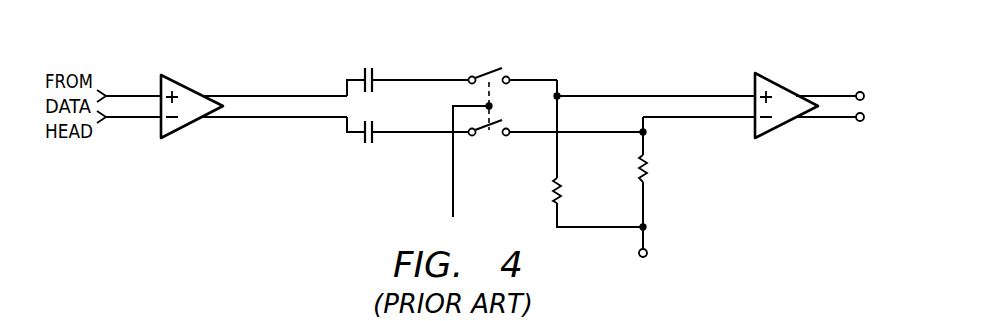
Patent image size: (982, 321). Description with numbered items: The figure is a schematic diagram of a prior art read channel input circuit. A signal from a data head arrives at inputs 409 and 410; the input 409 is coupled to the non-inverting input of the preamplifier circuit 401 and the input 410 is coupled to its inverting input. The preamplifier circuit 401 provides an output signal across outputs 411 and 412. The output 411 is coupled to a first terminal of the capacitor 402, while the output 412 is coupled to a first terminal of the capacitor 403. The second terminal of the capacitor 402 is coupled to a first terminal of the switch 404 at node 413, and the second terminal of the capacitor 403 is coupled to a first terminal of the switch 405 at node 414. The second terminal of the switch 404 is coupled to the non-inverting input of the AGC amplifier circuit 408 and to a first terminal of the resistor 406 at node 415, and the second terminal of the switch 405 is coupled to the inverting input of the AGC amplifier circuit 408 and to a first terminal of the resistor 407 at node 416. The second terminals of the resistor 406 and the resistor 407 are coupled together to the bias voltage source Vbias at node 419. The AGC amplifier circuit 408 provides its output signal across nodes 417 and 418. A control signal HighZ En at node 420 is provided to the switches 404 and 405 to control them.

The preamplifier circuit 401 is at (178, 140).
The capacitor 402 is at (362, 73).
The capacitor 403 is at (370, 144).
The switch 404 is at (498, 70).
The switch 405 is at (490, 135).
The resistor 406 is at (555, 190).
The resistor 407 is at (641, 167).
The AGC amplifier circuit 408 is at (770, 140).
The input 409 is at (122, 93).
The input 410 is at (122, 120).
The output 411 is at (270, 93).
The output 412 is at (270, 120).
The node 413 is at (425, 78).
The node 414 is at (425, 135).
The node 415 is at (712, 93).
The node 416 is at (712, 120).
The node 417 is at (840, 92).
The node 418 is at (840, 120).
The node 419 is at (645, 205).
The node 420 is at (452, 197).